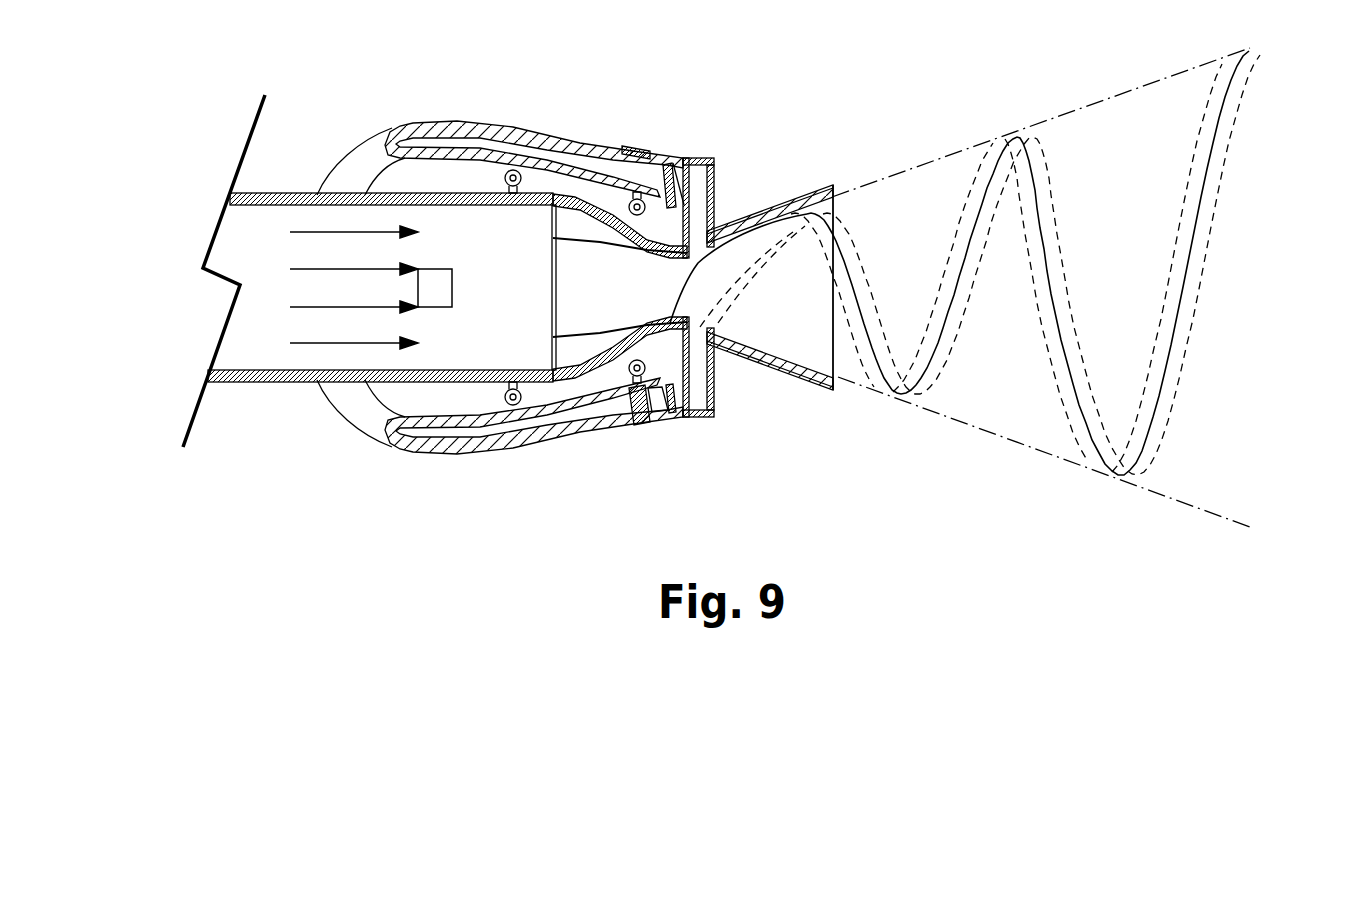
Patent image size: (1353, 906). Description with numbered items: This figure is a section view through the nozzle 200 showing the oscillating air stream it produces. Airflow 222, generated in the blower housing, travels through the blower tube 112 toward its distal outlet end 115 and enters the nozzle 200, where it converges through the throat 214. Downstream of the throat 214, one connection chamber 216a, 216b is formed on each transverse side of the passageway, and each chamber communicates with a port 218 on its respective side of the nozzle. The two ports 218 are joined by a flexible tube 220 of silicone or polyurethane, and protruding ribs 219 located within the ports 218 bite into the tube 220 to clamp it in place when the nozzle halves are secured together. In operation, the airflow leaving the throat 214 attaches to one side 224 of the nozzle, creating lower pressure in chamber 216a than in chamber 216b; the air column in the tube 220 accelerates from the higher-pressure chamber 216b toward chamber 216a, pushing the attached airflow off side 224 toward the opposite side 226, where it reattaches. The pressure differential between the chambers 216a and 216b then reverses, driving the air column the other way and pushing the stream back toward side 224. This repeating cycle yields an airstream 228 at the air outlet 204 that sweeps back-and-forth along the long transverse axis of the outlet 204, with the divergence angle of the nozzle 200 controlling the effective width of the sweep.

The blower tube 112 is at (290, 193).
The outlet end 115 is at (557, 350).
The nozzle 200 is at (722, 151).
The air outlet 204 is at (838, 393).
The throat 214 is at (752, 208).
The connection chamber 216a is at (690, 158).
The connection chamber 216b is at (712, 417).
The port 218 is at (650, 148).
The ribs 219 is at (640, 427).
The flexible tube 220 is at (362, 146).
The airflow 222 is at (297, 345).
The side 224 is at (840, 228).
The side 226 is at (797, 360).
The airstream 228 is at (1030, 147).